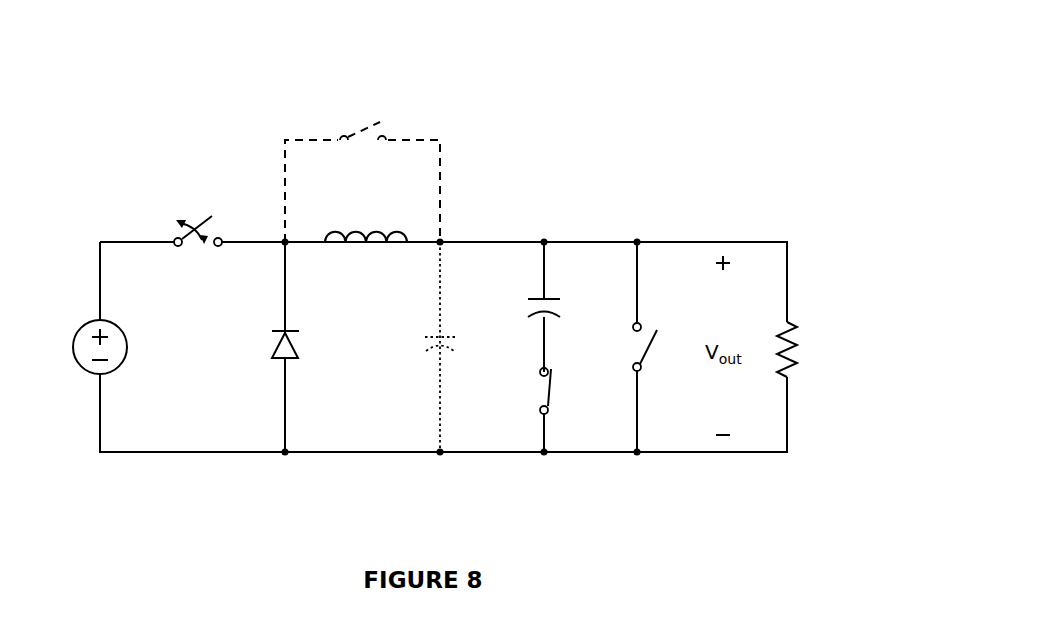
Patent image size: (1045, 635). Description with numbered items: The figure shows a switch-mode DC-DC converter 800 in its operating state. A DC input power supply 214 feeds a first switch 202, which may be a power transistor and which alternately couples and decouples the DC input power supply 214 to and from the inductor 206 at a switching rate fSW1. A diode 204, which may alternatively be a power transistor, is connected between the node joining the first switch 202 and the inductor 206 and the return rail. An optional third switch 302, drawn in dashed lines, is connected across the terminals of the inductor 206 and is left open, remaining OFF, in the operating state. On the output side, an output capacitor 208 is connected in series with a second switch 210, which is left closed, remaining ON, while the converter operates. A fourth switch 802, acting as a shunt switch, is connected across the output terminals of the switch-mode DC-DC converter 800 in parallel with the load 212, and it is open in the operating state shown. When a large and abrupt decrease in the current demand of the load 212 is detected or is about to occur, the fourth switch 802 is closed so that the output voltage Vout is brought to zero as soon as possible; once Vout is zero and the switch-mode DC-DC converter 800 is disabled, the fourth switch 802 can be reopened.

The switch-mode DC-DC converter 800 is at (694, 93).
The DC input power supply 214 is at (83, 320).
The first switch 202 is at (201, 187).
The third switch 302 is at (365, 105).
The inductor 206 is at (365, 224).
The diode 204 is at (268, 342).
The output capacitor 208 is at (520, 307).
The second switch 210 is at (520, 390).
The fourth switch 802 is at (630, 346).
The load 212 is at (800, 378).